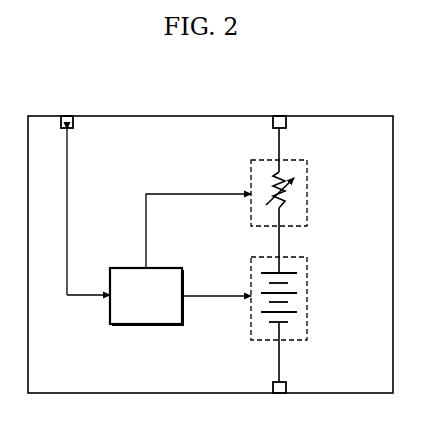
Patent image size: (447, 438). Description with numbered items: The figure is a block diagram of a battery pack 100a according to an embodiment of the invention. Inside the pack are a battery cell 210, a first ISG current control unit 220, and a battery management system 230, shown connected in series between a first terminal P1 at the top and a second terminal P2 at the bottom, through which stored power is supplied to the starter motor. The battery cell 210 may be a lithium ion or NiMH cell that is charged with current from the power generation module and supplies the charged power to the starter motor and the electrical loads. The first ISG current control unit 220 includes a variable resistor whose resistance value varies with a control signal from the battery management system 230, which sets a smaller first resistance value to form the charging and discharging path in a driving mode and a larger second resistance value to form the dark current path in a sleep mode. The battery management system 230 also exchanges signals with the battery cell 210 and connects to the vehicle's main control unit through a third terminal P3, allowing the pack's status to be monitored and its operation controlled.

The battery pack 100a is at (336, 118).
The battery cell 210 is at (309, 272).
The first ISG current control unit 220 is at (309, 173).
The battery management system 230 is at (170, 266).
The first terminal P1 is at (279, 111).
The second terminal P2 is at (279, 399).
The third terminal P3 is at (66, 111).